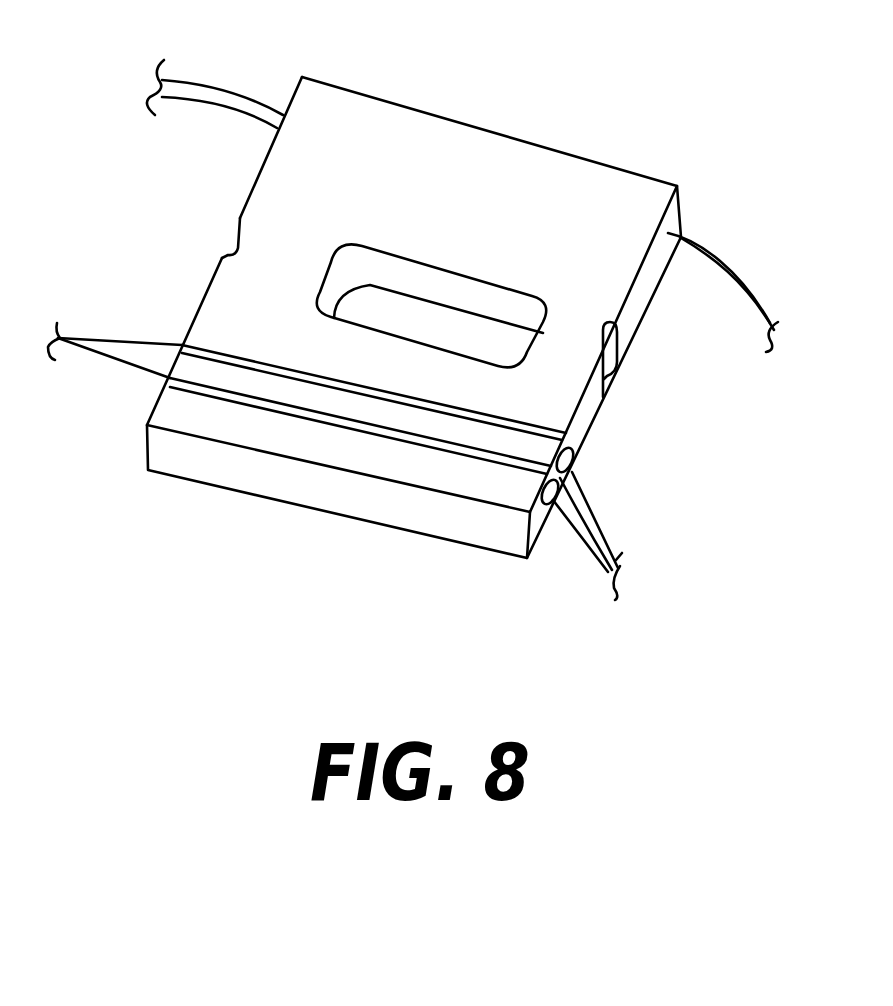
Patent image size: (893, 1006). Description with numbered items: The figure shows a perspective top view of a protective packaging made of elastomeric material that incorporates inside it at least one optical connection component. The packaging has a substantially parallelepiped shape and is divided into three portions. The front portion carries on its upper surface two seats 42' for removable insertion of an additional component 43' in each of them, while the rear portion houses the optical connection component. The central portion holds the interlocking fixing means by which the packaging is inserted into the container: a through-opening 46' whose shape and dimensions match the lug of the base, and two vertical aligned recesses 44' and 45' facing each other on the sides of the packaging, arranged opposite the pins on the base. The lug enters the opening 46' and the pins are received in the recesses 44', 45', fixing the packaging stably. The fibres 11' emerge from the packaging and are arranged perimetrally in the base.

The fibres 11' is at (434, 302).
The seats 42' is at (368, 462).
The additional component 43' is at (609, 465).
The vertical aligned recess 44' is at (186, 211).
The vertical aligned recess 45' is at (667, 359).
The through-opening 46' is at (431, 272).